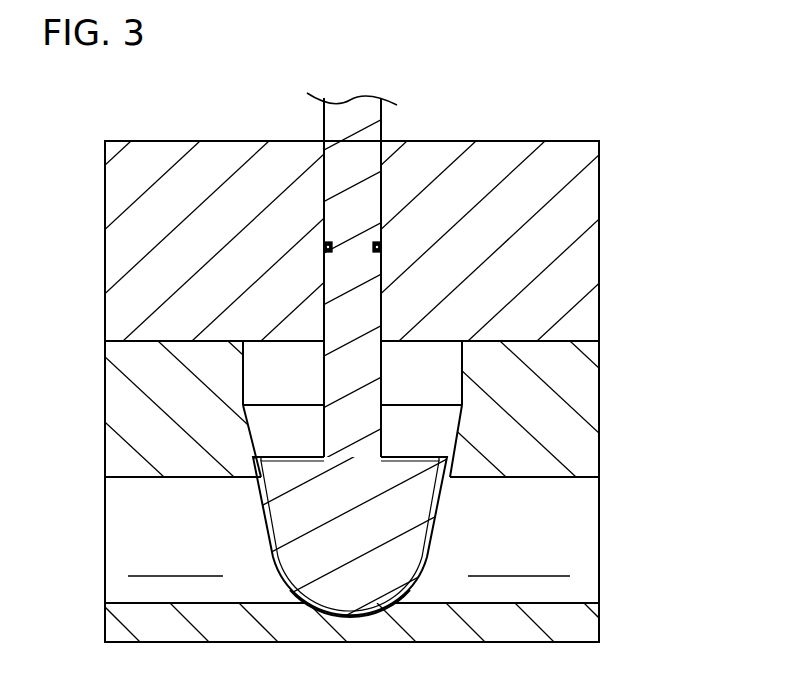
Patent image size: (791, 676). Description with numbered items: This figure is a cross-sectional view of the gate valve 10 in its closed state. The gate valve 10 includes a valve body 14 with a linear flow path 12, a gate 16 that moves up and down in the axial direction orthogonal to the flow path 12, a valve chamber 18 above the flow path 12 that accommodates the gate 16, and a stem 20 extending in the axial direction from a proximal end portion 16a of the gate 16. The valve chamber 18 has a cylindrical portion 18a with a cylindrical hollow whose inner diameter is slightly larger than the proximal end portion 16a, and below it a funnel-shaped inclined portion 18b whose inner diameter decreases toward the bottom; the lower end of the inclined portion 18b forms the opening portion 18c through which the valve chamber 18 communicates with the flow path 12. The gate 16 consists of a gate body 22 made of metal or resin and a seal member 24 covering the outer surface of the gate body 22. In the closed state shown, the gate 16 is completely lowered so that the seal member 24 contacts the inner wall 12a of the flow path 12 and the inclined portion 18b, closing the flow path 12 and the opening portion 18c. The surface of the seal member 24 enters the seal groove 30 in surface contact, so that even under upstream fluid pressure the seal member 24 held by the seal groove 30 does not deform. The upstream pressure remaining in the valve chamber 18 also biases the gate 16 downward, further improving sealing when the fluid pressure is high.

The gate valve 10 is at (170, 110).
The valve body 14 is at (590, 262).
The stem 20 is at (333, 181).
The valve chamber 18 is at (358, 409).
The cylindrical portion 18a is at (465, 370).
The inclined portion 18b is at (452, 441).
The opening portion 18c is at (264, 500).
The gate 16 is at (394, 510).
The proximal end portion 16a is at (262, 455).
The gate body 22 is at (403, 504).
The seal member 24 is at (432, 549).
The seal groove 30 is at (347, 612).
The flow path 12 is at (585, 548).
The inner wall 12a is at (587, 510).